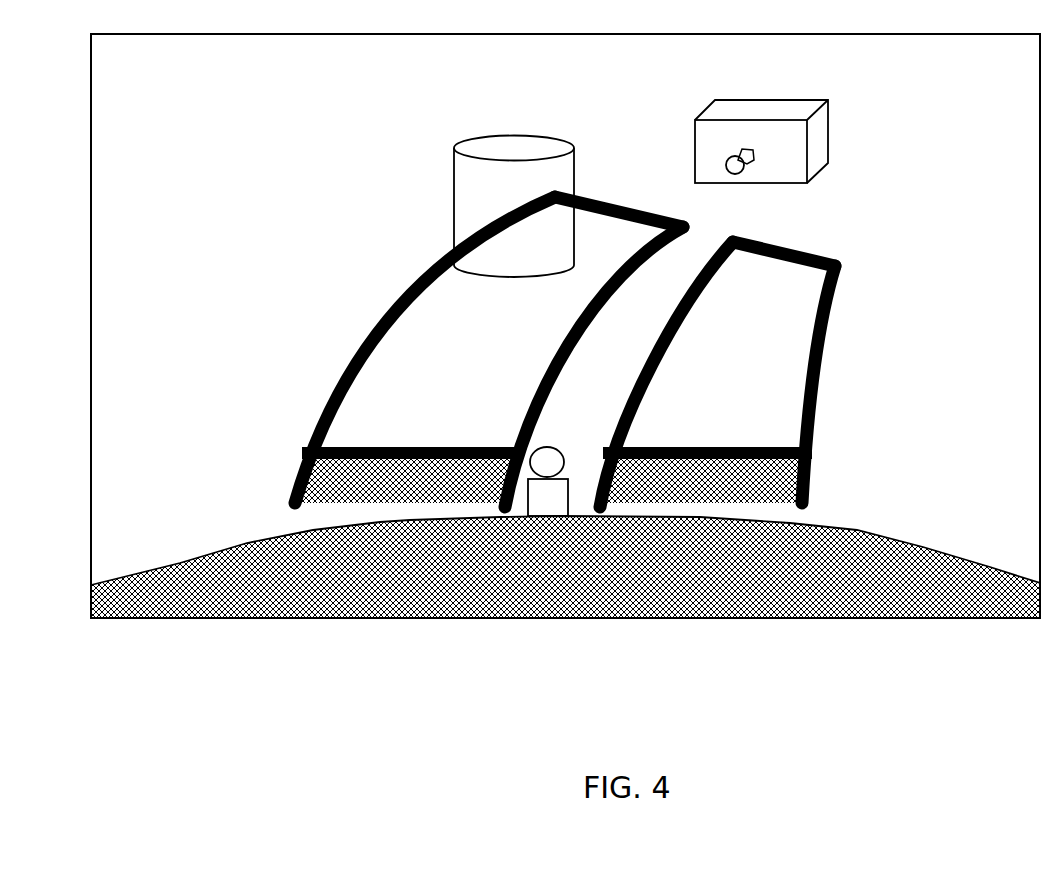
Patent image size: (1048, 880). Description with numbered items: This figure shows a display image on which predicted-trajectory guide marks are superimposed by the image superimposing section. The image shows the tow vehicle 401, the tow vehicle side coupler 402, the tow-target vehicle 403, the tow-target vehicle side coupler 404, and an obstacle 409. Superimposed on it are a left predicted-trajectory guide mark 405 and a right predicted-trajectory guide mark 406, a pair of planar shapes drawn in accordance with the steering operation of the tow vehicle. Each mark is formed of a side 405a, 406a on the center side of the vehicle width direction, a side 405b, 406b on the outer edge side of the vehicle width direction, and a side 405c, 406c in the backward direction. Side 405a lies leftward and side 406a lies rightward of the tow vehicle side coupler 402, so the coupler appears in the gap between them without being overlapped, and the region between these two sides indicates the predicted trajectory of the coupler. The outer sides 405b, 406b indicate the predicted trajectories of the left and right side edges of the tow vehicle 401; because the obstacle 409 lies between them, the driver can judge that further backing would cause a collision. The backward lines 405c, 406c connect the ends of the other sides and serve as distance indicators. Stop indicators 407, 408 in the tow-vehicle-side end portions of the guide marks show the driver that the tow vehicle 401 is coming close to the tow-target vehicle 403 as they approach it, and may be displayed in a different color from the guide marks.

The tow vehicle 401 is at (767, 523).
The tow vehicle side coupler 402 is at (568, 462).
The tow-target vehicle 403 is at (830, 130).
The tow-target vehicle side coupler 404 is at (745, 148).
The left predicted-trajectory guide mark 405 is at (401, 280).
The side on the center side of the vehicle width direction 405a is at (627, 262).
The side on the outer edge side of the vehicle width direction 405b is at (360, 358).
The side in the backward direction 405c is at (642, 217).
The right predicted-trajectory guide mark 406 is at (817, 344).
The side on the center side of the vehicle width direction 406a is at (695, 262).
The side on the outer edge side of the vehicle width direction 406b is at (793, 373).
The side in the backward direction 406c is at (803, 257).
The stop indicator 407 is at (353, 482).
The stop indicator 408 is at (800, 477).
The obstacle 409 is at (448, 205).